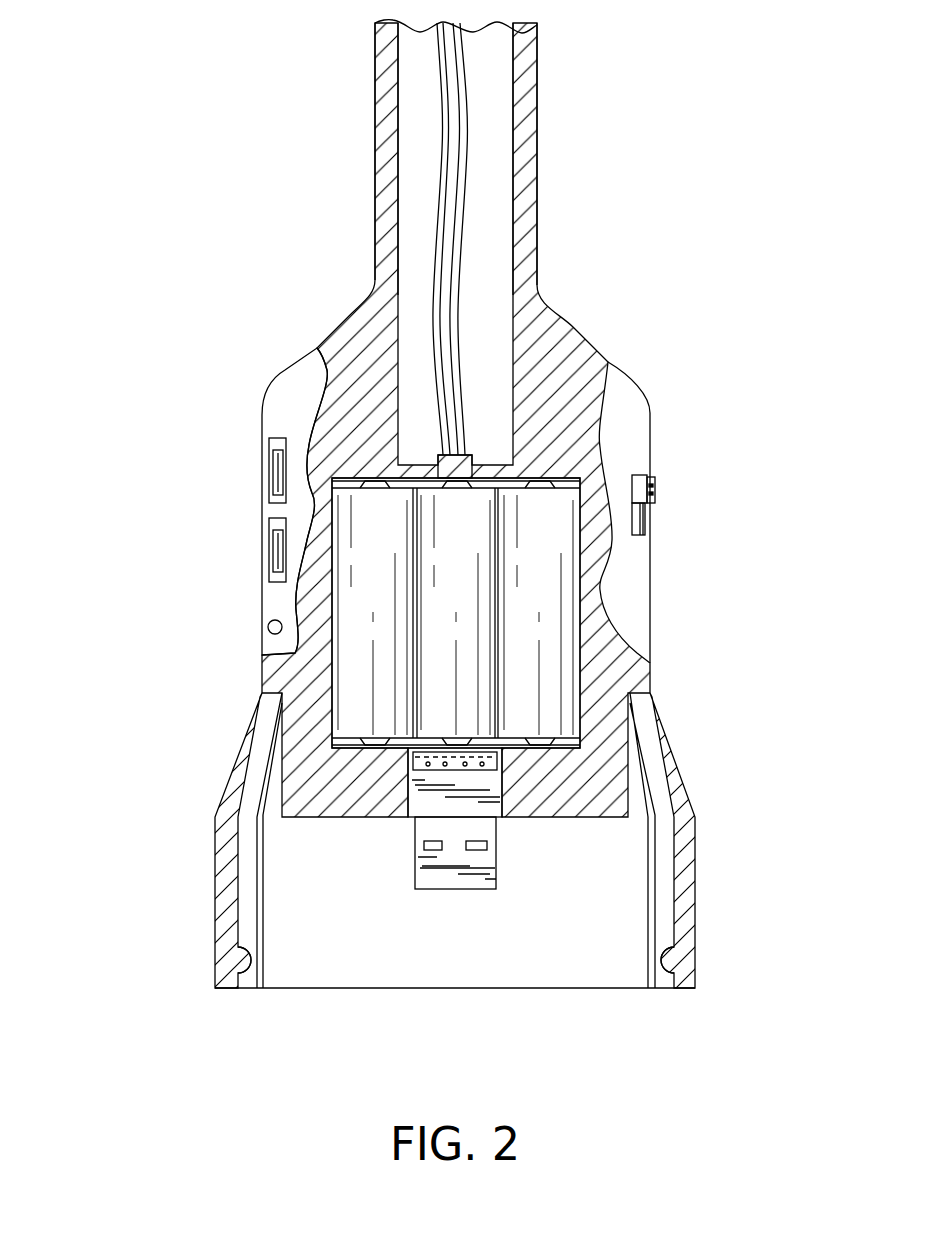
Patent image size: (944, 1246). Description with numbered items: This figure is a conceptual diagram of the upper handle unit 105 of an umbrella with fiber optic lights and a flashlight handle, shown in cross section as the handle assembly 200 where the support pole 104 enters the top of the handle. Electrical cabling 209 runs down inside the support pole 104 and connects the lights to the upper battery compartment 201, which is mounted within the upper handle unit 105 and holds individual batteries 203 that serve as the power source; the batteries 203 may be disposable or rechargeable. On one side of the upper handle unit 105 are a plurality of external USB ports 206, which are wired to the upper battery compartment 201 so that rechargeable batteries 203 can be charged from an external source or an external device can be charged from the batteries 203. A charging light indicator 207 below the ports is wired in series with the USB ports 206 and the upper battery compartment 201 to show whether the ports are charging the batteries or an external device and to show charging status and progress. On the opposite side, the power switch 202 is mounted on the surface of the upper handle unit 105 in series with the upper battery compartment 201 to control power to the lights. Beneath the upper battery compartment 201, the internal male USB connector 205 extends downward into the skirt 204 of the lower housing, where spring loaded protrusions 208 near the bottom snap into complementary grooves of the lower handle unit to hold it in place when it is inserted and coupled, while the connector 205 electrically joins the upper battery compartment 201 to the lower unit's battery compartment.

The support pole 104 is at (365, 149).
The upper handle unit 105 is at (230, 406).
The handle assembly 200 is at (678, 170).
The upper battery compartment 201 is at (547, 577).
The power switch 202 is at (655, 487).
The batteries 203 is at (547, 641).
The skirt / base housing 204 is at (695, 863).
The internal male USB connector 205 is at (474, 882).
The external USB ports 206 is at (268, 470).
The charging light indicator 207 is at (268, 627).
The spring loaded protrusions 208 is at (250, 966).
The electrical cabling 209 is at (437, 253).